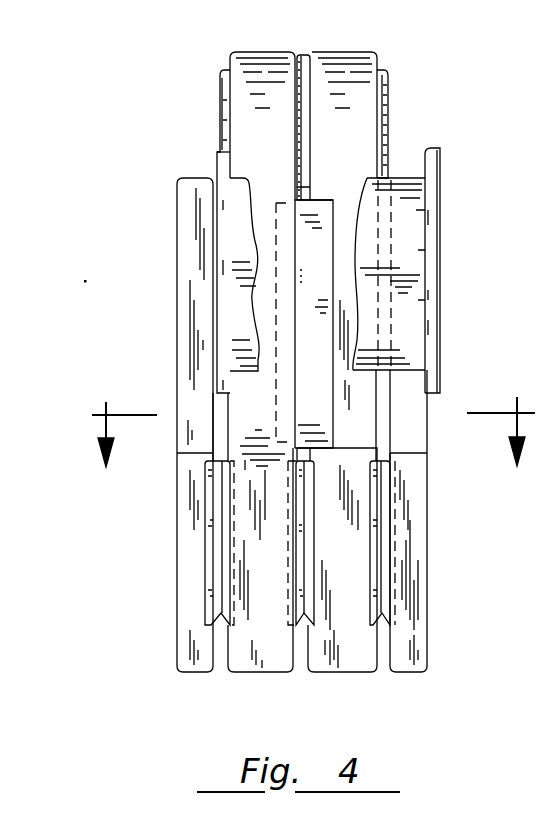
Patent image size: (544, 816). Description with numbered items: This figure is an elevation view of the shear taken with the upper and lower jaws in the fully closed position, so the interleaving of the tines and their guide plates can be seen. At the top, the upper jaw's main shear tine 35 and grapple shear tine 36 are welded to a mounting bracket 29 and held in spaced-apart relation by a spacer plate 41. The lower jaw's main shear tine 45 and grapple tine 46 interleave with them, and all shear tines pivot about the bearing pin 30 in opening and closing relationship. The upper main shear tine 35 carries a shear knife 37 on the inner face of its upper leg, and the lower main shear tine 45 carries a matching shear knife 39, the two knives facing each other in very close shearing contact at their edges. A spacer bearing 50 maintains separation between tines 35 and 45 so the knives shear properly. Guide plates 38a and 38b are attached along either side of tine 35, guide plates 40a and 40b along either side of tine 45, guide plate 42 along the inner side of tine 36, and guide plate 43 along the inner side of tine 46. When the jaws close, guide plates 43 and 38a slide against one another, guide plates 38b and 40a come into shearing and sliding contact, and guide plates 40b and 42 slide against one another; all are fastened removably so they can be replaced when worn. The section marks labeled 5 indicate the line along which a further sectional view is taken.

The mounting bracket 29 is at (218, 152).
The bearing pin 30 is at (388, 80).
The main shear tine 35 is at (260, 676).
The grapple shear tine 36 is at (405, 676).
The shear knife 37 is at (276, 232).
The guide plate 38a is at (224, 571).
The guide plate 38b is at (302, 573).
The shear knife 39 is at (335, 223).
The guide plate 40a is at (308, 568).
The guide plate 40b is at (377, 578).
The spacer plate 41 is at (405, 263).
The guide plate 42 is at (387, 539).
The guide plate 43 is at (204, 541).
The main shear tine 45 is at (333, 676).
The grapple tine 46 is at (195, 676).
The spacer bearing 50 is at (303, 55).
The section line 5 is at (313, 456).